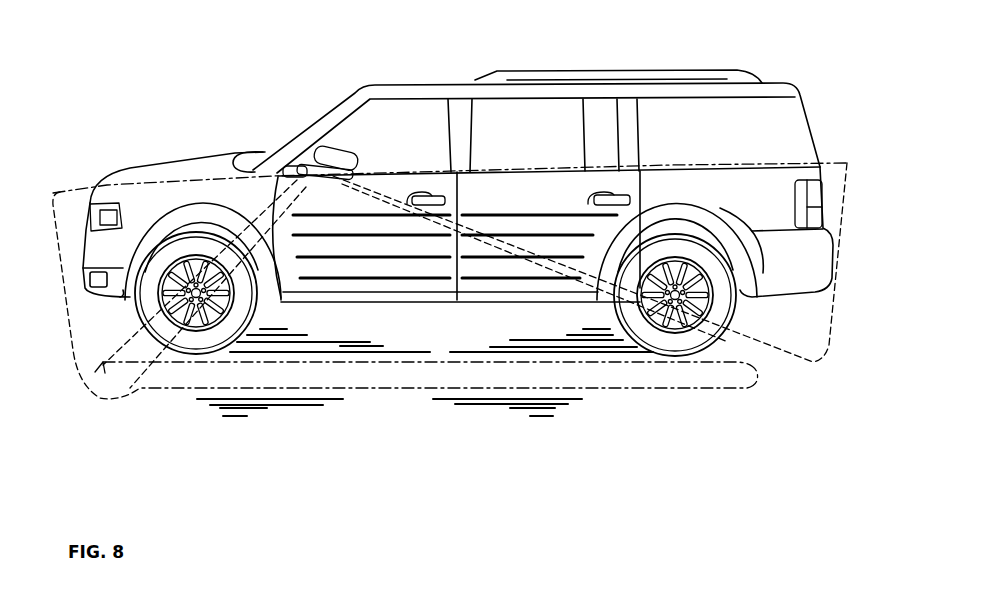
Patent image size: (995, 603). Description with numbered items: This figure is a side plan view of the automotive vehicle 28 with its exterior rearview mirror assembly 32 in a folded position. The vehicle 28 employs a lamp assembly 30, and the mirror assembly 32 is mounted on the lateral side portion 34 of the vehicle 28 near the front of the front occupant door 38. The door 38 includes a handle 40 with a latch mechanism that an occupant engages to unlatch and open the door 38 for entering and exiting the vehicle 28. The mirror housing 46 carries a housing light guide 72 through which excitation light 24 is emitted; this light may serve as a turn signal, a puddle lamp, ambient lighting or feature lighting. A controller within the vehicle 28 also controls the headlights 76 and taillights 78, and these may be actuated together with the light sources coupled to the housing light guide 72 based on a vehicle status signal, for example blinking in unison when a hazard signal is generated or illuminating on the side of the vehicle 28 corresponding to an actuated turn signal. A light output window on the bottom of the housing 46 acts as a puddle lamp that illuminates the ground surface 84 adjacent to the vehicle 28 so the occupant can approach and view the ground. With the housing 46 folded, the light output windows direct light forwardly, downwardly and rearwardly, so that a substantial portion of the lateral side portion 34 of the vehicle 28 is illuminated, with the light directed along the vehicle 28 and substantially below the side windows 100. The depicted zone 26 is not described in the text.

The excitation light 24 is at (73, 355).
The ground projection zone 26 is at (728, 342).
The automotive vehicle 28 is at (660, 66).
The lamp assembly 30 is at (327, 147).
The exterior rearview mirror assembly 32 is at (331, 143).
The lateral side portion 34 is at (800, 108).
The front occupant door 38 is at (360, 303).
The handle 40 is at (427, 207).
The housing 46 is at (343, 168).
The housing light guide 72 is at (307, 150).
The headlights 76 is at (90, 203).
The taillights 78 is at (822, 197).
The ground surface 84 is at (424, 424).
The side windows 100 is at (418, 117).